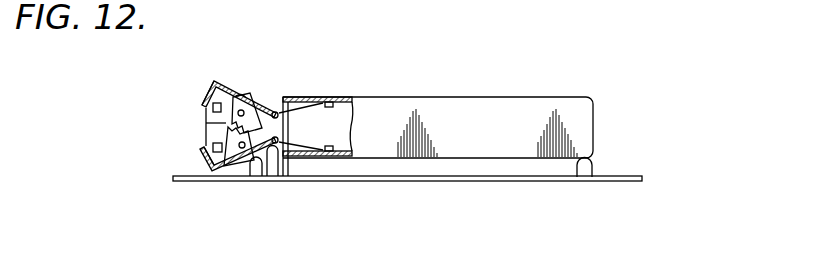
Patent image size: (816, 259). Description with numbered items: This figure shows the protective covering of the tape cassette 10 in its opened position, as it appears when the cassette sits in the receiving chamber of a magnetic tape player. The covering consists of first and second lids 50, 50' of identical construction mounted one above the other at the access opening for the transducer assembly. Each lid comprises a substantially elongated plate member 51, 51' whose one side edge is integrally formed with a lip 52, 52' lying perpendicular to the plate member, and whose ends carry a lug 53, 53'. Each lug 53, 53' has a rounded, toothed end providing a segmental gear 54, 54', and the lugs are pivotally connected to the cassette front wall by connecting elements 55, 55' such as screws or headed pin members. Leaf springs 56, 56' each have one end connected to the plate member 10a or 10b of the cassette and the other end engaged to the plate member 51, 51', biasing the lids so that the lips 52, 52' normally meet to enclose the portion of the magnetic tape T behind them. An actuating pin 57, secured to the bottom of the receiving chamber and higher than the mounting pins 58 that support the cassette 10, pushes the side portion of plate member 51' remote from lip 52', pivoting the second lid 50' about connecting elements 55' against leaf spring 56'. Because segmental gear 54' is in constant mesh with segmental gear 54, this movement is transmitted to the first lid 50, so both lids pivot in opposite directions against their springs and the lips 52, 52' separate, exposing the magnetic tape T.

The tape cassette 10 is at (590, 91).
The plate member 10a is at (350, 97).
The plate member 10b is at (341, 158).
The first lid 50 is at (168, 79).
The second lid 50' is at (221, 199).
The plate member 51 is at (290, 73).
The plate member 51' is at (220, 194).
The lip 52 is at (213, 73).
The lip 52' is at (198, 181).
The lug 53 is at (172, 100).
The lug 53' is at (171, 197).
The segmental gear 54 is at (251, 81).
The segmental gear 54' is at (187, 160).
The connecting elements 55 is at (220, 63).
The connecting elements 55' is at (265, 204).
The leaf spring 56 is at (315, 71).
The leaf spring 56' is at (342, 130).
The actuating pin 57 is at (291, 172).
The mounting pins 58 is at (273, 170).
The magnetic tape T is at (204, 125).